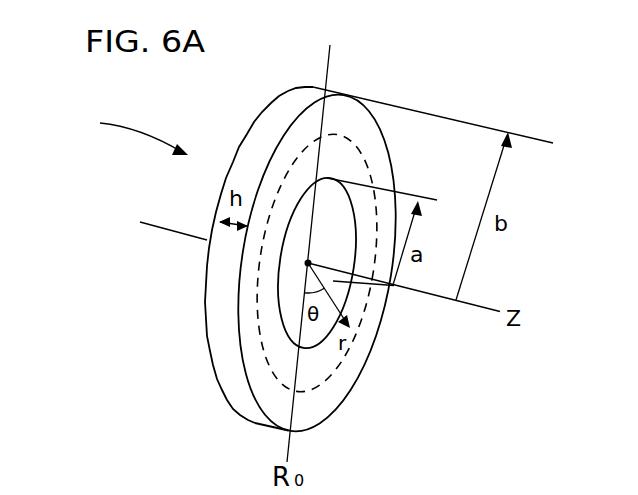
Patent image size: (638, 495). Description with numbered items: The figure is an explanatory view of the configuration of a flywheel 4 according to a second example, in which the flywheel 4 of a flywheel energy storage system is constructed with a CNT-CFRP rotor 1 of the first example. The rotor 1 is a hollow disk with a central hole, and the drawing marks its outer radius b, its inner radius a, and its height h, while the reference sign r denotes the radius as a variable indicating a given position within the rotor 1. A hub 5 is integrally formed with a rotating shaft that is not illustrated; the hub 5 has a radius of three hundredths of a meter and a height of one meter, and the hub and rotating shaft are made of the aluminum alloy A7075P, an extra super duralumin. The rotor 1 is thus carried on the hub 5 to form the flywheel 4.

The rotor 1 is at (253, 138).
The flywheel 4 is at (130, 132).
The hub 5 is at (387, 297).